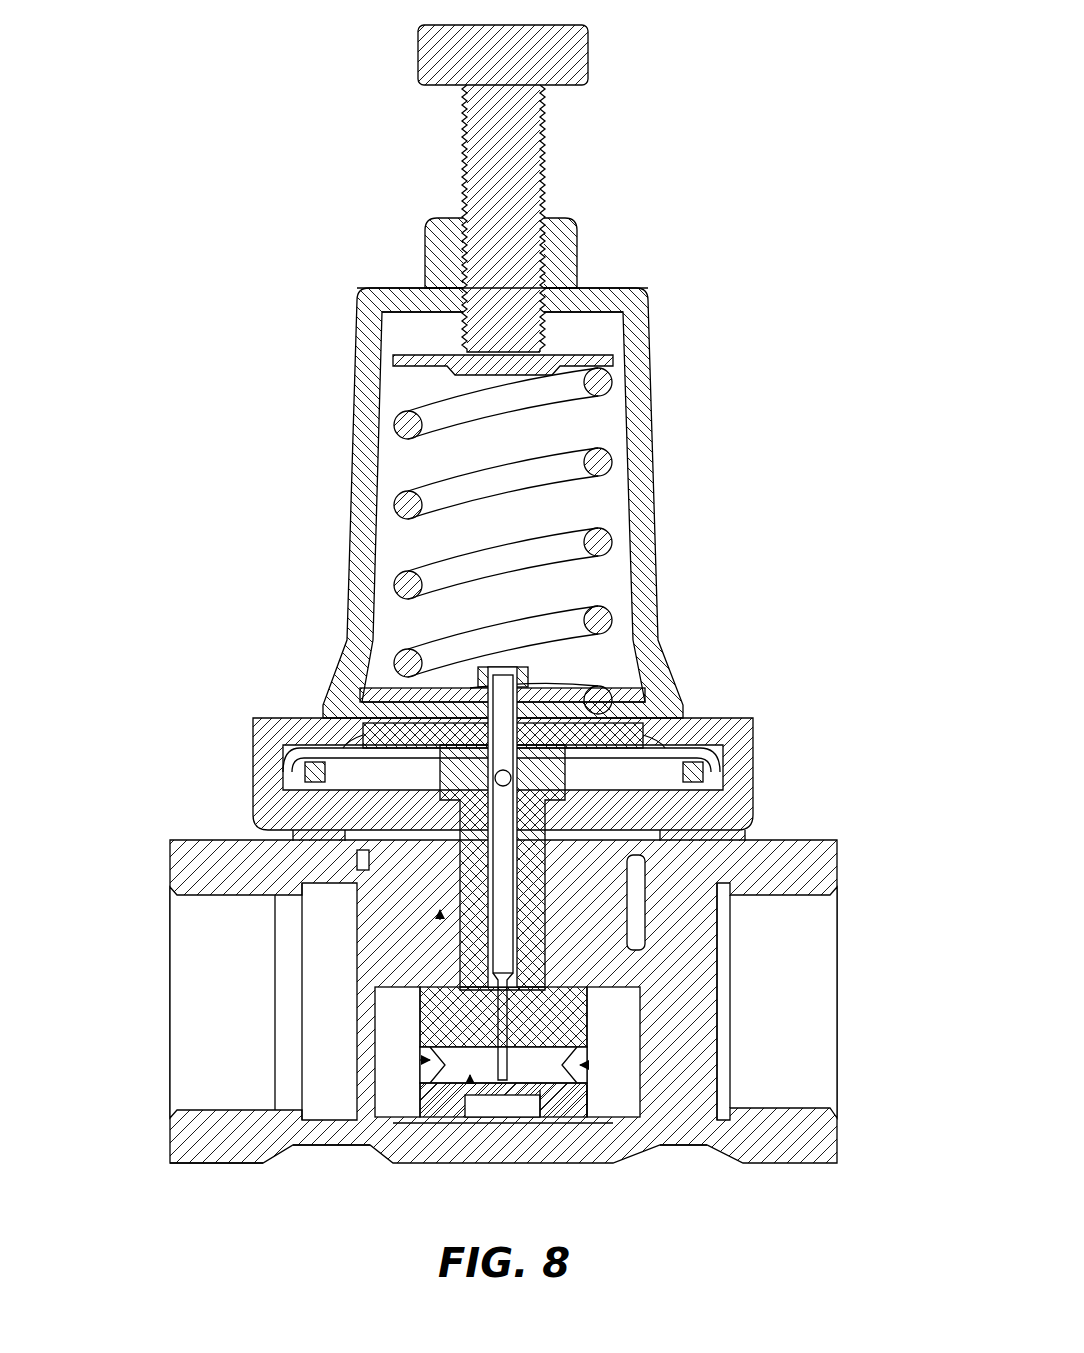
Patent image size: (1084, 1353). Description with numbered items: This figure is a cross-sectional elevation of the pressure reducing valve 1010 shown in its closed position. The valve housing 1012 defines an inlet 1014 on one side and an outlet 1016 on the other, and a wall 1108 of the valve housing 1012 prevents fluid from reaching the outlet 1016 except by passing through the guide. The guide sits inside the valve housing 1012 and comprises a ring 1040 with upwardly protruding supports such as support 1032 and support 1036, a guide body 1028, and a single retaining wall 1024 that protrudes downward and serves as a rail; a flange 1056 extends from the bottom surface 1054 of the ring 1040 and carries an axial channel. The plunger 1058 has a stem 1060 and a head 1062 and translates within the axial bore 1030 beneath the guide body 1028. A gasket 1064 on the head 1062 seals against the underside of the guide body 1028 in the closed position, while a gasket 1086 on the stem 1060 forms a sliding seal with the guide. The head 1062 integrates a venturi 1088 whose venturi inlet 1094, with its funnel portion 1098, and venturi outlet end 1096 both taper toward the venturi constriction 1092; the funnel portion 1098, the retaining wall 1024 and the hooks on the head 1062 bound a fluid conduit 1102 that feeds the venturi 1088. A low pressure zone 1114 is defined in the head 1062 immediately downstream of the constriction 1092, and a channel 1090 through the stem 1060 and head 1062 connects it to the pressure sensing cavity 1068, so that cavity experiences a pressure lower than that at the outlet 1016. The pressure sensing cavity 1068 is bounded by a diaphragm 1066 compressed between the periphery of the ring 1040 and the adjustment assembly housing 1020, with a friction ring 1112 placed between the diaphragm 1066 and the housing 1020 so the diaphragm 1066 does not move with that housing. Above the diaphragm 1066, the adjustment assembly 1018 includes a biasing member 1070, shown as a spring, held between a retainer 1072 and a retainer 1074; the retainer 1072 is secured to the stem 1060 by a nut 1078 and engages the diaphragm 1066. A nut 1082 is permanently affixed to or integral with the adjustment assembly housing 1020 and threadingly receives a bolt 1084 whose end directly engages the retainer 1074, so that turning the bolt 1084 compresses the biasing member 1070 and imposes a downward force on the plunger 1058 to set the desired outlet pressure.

The pressure reducing valve 1010 is at (283, 188).
The valve housing 1012 is at (300, 1150).
The inlet 1014 is at (160, 1075).
The outlet 1016 is at (843, 1042).
The adjustment assembly 1018 is at (612, 423).
The adjustment assembly housing 1020 is at (650, 515).
The retaining wall 1024 is at (330, 1145).
The guide body 1028 is at (790, 983).
The axial bore 1030 is at (478, 1125).
The support 1032 is at (460, 905).
The support 1036 is at (790, 870).
The ring 1040 is at (745, 788).
The bottom surface 1054 is at (438, 915).
The flange 1056 is at (455, 930).
The plunger 1058 is at (488, 848).
The stem 1060 is at (480, 797).
The head 1062 is at (520, 1120).
The gasket 1064 is at (400, 930).
The diaphragm 1066 is at (745, 770).
The pressure sensing cavity 1068 is at (330, 770).
The biasing member 1070 is at (420, 500).
The retainer 1072 is at (640, 725).
The retainer 1074 is at (590, 355).
The nut 1078 is at (470, 690).
The nut 1082 is at (450, 243).
The bolt 1084 is at (540, 135).
The gasket 1086 is at (703, 795).
The venturi 1088 is at (560, 1120).
The channel 1090 is at (505, 918).
The venturi constriction 1092 is at (420, 1148).
The venturi inlet 1094 is at (213, 1152).
The venturi outlet end 1096 is at (760, 1070).
The funnel portion 1098 is at (415, 1060).
The fluid conduit 1102 is at (465, 1085).
The wall 1108 is at (760, 935).
The friction ring 1112 is at (662, 745).
The low pressure zone 1114 is at (590, 1120).